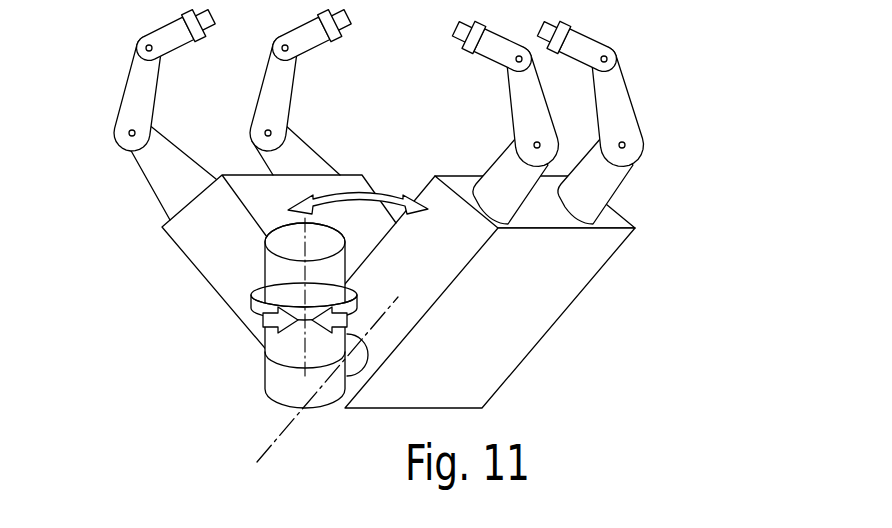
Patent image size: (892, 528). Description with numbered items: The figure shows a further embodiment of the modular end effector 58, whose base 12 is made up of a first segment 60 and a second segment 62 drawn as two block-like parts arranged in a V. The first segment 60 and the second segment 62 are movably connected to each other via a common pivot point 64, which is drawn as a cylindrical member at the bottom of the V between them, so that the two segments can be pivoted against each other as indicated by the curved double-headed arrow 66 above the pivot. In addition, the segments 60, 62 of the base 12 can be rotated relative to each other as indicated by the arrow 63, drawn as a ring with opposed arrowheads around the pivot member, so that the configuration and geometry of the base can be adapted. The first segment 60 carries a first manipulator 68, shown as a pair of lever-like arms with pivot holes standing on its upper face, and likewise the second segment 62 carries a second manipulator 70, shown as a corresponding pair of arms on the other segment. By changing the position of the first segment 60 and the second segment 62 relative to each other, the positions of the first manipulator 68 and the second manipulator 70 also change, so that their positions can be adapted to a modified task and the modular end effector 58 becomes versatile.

The base 12 is at (550, 400).
The modular end effector 58 is at (410, 255).
The first segment 60 is at (567, 273).
The second segment 62 is at (197, 240).
The arrow 63 is at (268, 325).
The common pivot point 64 is at (287, 380).
The arrow 66 is at (368, 192).
The first manipulator 68 is at (520, 98).
The second manipulator 70 is at (143, 102).